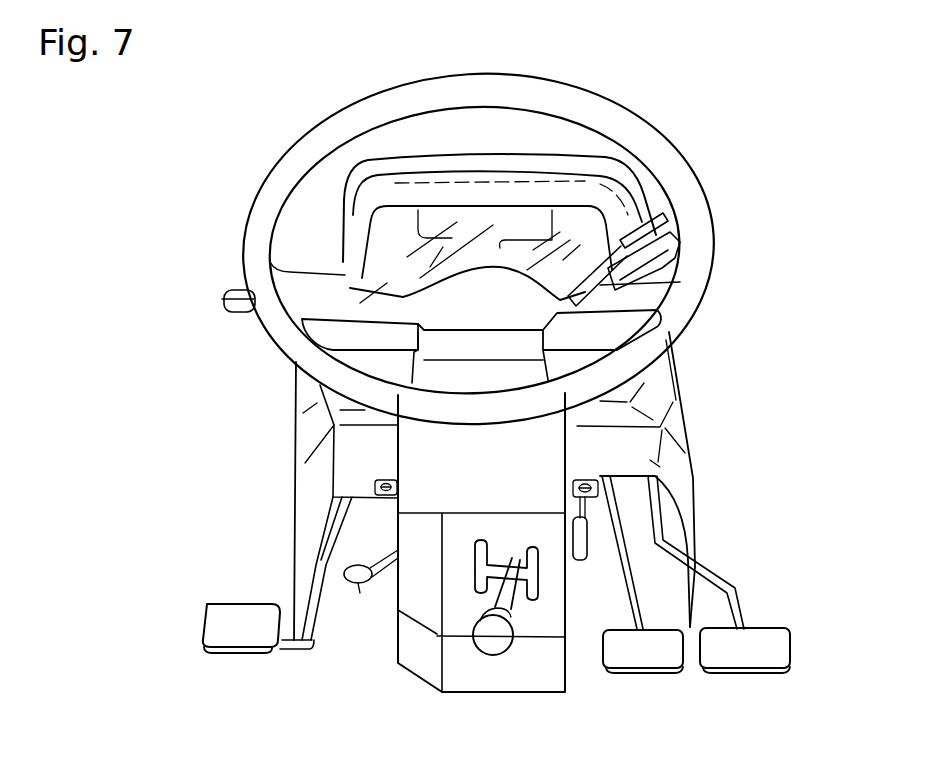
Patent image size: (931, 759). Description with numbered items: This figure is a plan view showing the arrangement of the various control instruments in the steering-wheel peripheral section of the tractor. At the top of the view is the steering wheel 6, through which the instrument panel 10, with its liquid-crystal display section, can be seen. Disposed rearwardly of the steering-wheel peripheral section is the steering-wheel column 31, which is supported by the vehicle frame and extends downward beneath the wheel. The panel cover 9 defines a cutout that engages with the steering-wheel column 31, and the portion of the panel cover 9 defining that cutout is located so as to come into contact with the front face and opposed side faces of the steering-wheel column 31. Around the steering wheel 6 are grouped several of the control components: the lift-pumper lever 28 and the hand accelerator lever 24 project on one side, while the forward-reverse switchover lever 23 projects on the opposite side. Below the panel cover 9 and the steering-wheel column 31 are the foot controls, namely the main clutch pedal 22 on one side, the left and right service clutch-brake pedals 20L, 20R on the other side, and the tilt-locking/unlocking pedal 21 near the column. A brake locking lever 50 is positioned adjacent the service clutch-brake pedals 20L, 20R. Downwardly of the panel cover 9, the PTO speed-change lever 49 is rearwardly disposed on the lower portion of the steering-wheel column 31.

The steering wheel 6 is at (683, 157).
The instrument panel 10 is at (385, 247).
The lift-pumper lever 28 is at (665, 212).
The hand accelerator lever 24 is at (677, 240).
The forward-reverse switchover lever 23 is at (222, 306).
The panel cover 9 is at (683, 412).
The steering-wheel column 31 is at (420, 443).
The PTO speed-change lever 49 is at (483, 642).
The brake locking lever 50 is at (580, 560).
The tilt-locking/unlocking pedal 21 is at (352, 587).
The main clutch pedal 22 is at (223, 633).
The left service clutch-brake pedal 20L is at (633, 650).
The right service clutch-brake pedal 20R is at (760, 660).